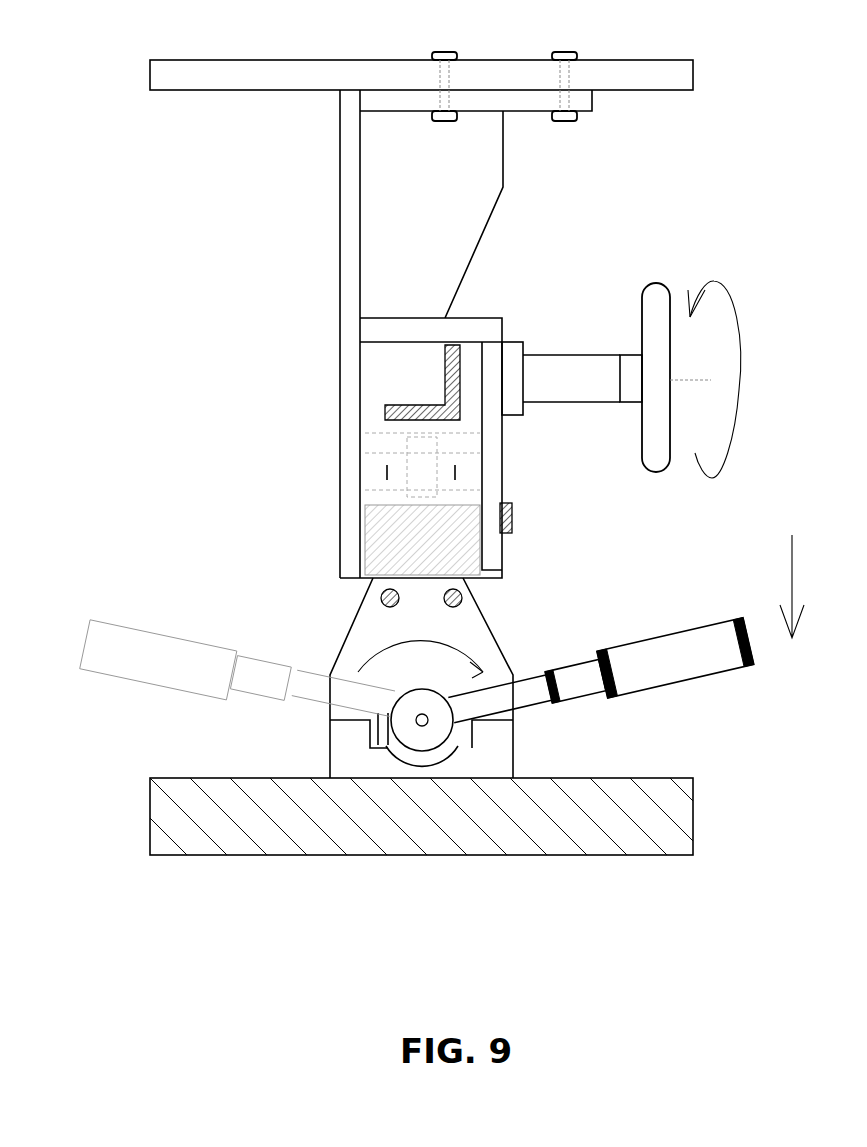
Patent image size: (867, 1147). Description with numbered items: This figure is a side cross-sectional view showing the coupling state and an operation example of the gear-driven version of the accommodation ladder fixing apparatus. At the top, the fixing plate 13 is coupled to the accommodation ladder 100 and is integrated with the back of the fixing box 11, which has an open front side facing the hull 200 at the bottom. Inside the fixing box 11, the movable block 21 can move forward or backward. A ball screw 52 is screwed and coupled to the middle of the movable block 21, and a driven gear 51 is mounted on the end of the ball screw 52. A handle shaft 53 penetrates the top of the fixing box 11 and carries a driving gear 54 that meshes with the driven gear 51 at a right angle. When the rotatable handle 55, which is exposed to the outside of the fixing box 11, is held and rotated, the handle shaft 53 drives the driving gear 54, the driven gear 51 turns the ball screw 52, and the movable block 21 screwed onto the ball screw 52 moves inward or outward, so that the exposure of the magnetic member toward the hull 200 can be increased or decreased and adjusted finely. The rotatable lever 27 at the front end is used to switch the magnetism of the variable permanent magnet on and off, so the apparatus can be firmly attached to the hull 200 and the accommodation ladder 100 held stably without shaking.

The accommodation ladder 100 is at (222, 74).
The fixing plate 13 is at (638, 72).
The fixing box 11 is at (473, 330).
The movable block 21 is at (463, 505).
The driving gear 54 is at (445, 360).
The driven gear 51 is at (385, 410).
The ball screw 52 is at (385, 500).
The handle shaft 53 is at (597, 382).
The rotatable handle 55 is at (660, 473).
The rotatable lever 27 is at (640, 675).
The hull 200 is at (403, 830).